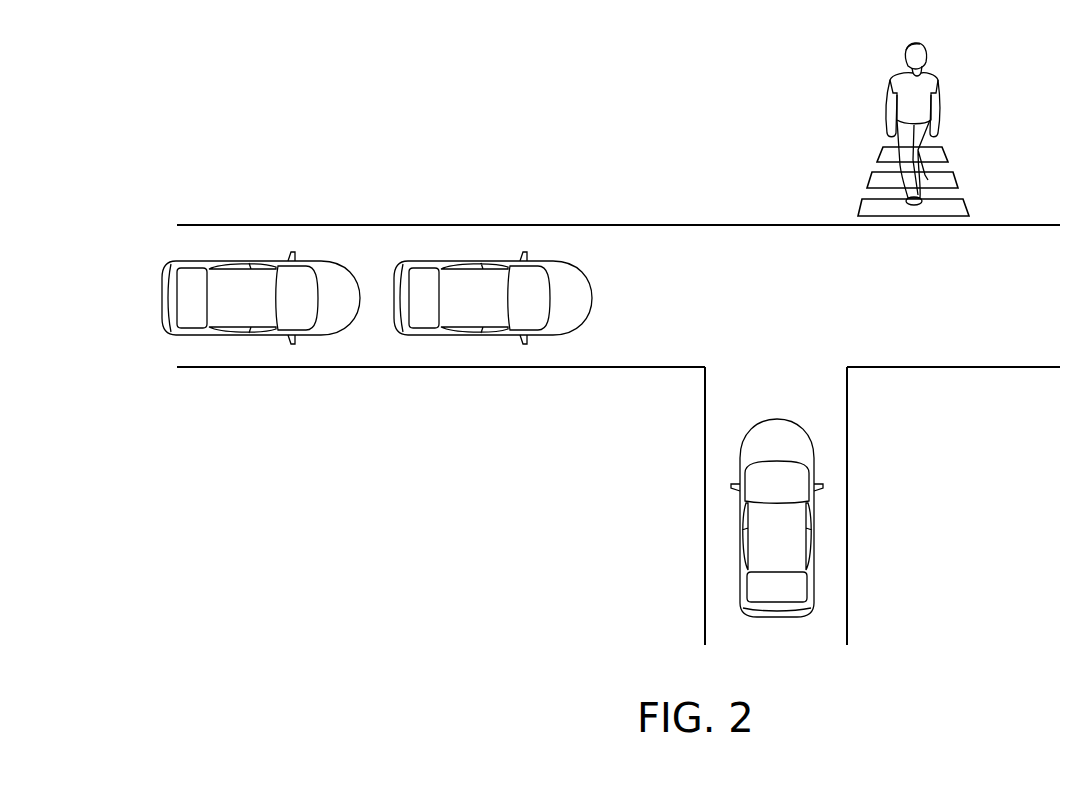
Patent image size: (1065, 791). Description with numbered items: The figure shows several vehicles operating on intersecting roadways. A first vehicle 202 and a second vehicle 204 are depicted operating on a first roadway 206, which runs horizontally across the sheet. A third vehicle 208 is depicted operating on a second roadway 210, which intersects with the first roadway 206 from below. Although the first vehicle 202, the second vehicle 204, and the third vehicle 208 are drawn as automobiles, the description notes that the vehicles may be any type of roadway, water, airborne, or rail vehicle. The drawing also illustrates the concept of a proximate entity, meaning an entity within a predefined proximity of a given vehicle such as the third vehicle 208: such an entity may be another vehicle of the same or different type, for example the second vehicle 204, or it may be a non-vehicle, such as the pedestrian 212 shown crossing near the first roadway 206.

The first vehicle 202 is at (270, 310).
The second vehicle 204 is at (502, 310).
The first roadway 206 is at (963, 313).
The third vehicle 208 is at (778, 420).
The second roadway 210 is at (800, 655).
The pedestrian 212 is at (843, 145).